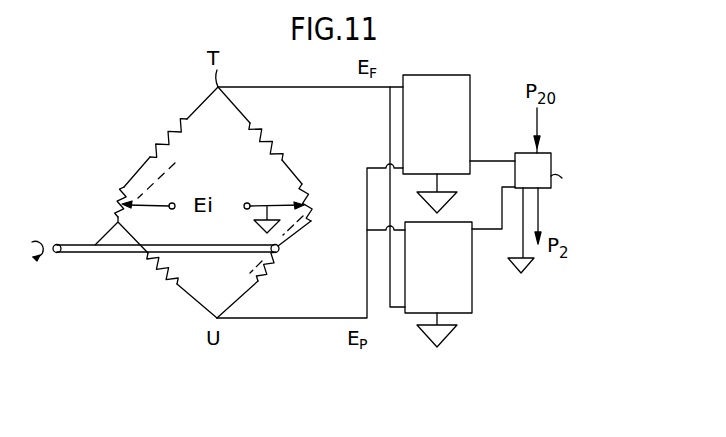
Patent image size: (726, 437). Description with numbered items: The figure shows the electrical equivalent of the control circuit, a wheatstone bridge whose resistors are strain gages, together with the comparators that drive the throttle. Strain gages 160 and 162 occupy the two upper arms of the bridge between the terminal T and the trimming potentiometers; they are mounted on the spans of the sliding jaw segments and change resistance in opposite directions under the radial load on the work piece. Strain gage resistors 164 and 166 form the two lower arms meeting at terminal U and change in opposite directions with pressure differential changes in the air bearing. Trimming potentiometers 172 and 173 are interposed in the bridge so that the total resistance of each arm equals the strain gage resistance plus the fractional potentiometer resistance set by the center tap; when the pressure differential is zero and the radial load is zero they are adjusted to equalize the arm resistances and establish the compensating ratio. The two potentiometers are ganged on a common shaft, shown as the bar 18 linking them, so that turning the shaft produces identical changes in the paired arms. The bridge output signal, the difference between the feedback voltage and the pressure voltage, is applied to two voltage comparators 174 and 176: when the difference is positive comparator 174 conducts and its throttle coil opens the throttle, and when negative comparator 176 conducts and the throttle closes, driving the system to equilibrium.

The lever bar 18 is at (70, 256).
The strain gage 160 is at (162, 134).
The strain gage 162 is at (282, 143).
The strain gage resistor 164 is at (270, 284).
The strain gage resistor 166 is at (156, 283).
The trimming potentiometer 172 is at (114, 207).
The trimming potentiometer 173 is at (313, 203).
The voltage comparator 174 is at (449, 139).
The voltage comparator 176 is at (447, 281).